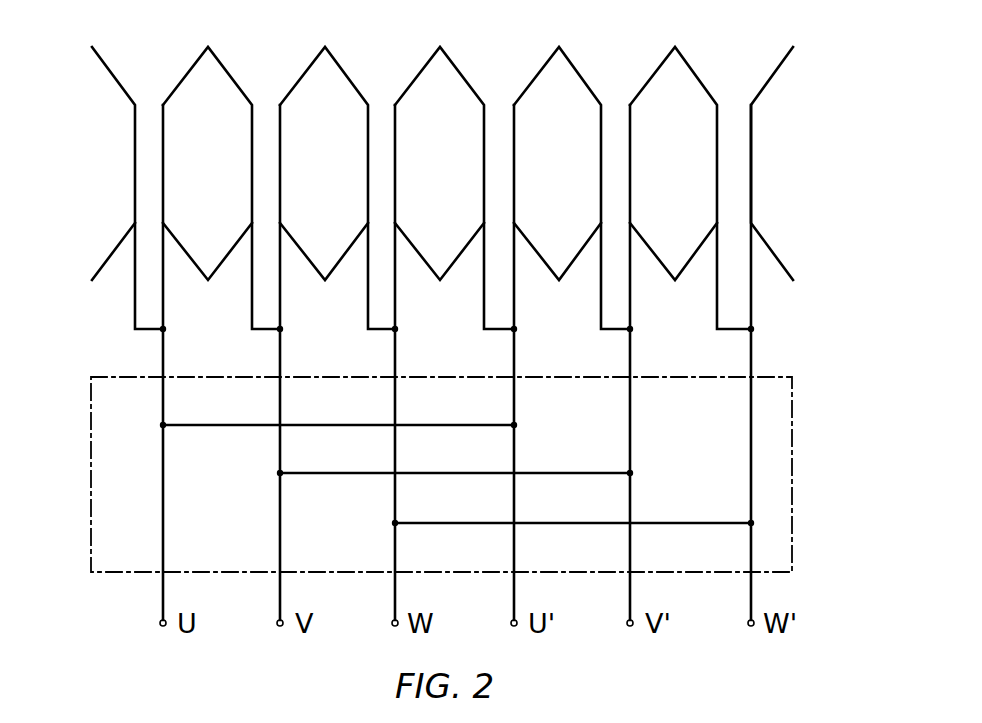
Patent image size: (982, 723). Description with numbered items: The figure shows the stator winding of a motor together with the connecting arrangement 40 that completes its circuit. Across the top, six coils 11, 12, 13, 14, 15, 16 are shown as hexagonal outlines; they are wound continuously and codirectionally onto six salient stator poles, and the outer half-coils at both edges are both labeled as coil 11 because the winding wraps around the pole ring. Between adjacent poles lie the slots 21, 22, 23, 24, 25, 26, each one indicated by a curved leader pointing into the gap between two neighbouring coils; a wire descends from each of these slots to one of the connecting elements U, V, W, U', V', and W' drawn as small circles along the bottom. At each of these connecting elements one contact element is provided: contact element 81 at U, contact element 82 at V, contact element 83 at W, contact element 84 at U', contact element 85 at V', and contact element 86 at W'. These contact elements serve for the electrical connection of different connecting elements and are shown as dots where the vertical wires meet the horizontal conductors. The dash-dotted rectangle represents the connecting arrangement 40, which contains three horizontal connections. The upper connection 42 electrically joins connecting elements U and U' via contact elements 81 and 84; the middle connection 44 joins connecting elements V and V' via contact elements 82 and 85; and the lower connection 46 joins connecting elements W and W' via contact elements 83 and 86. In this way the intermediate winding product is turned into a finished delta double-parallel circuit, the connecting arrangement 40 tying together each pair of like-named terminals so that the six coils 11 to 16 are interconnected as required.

The coil 11 is at (80, 190).
The coil 12 is at (196, 190).
The coil 13 is at (313, 190).
The coil 14 is at (430, 190).
The coil 15 is at (547, 190).
The coil 16 is at (663, 190).
The slot 21 is at (147, 117).
The slot 22 is at (264, 117).
The slot 23 is at (380, 117).
The slot 24 is at (498, 117).
The slot 25 is at (614, 117).
The slot 26 is at (733, 117).
The connecting arrangement 40 is at (774, 377).
The connection 42 is at (218, 427).
The connection 44 is at (334, 475).
The connection 46 is at (700, 522).
The contact element 81 is at (160, 430).
The contact element 82 is at (277, 480).
The contact element 83 is at (392, 528).
The contact element 84 is at (511, 430).
The contact element 85 is at (627, 478).
The contact element 86 is at (748, 528).